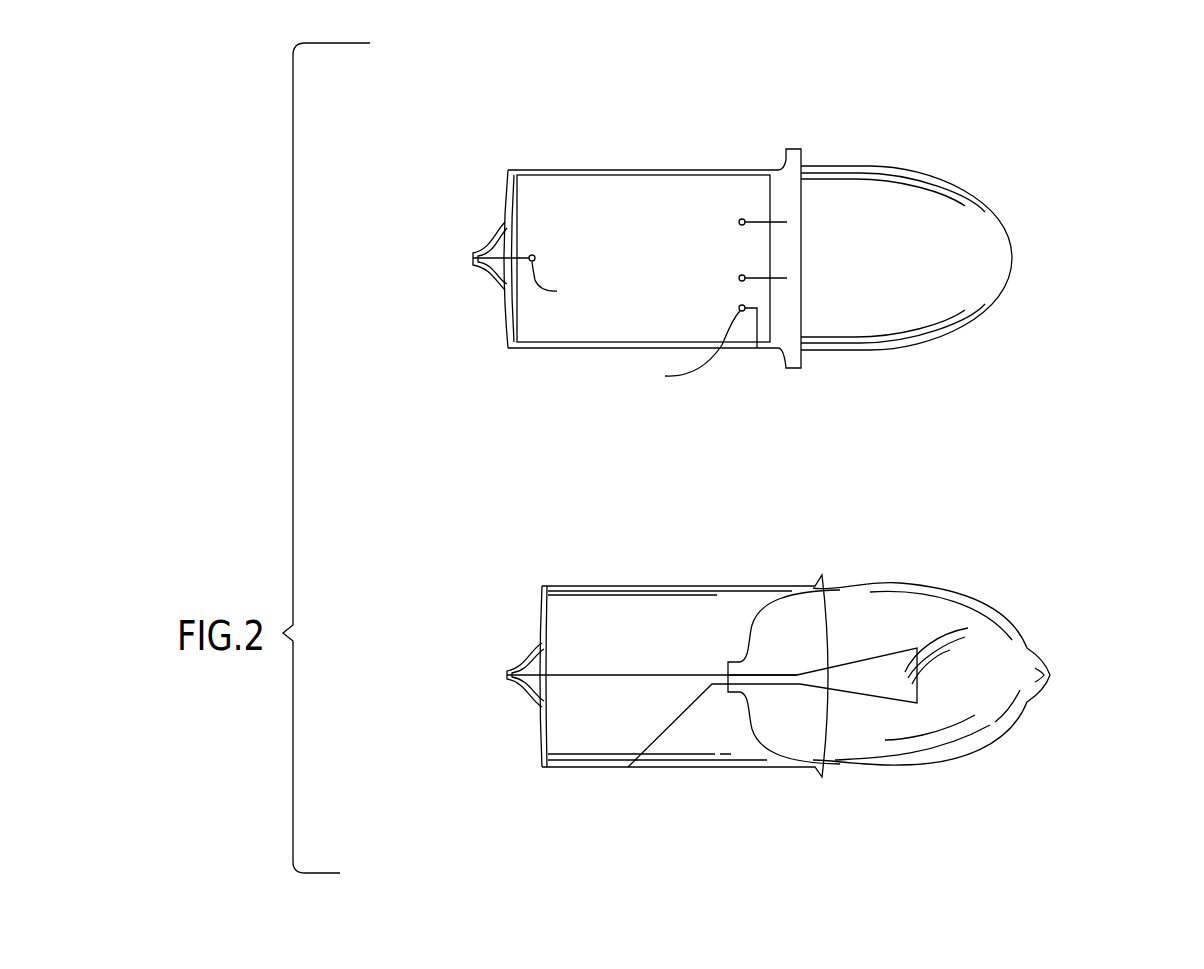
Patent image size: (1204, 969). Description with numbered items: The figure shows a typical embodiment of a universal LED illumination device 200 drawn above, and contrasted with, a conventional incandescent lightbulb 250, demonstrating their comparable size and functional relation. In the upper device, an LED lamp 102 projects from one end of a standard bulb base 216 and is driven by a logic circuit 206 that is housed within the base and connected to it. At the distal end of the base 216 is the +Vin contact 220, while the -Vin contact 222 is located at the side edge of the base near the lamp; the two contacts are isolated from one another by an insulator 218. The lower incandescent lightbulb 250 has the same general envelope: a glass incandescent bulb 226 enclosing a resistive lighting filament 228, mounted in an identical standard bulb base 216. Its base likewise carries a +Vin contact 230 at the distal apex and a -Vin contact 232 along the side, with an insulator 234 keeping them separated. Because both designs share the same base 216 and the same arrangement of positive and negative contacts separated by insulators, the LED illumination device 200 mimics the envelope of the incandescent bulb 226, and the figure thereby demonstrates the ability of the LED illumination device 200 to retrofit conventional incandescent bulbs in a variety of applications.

The LED illumination device 200 is at (726, 158).
The standard bulb base 216 is at (540, 348).
The insulator 218 is at (503, 182).
The +Vin contact 220 is at (472, 258).
The logic circuit 206 is at (678, 270).
The -Vin contact 222 is at (752, 350).
The LED lamp 102 is at (1007, 232).
The incandescent lightbulb 250 is at (778, 781).
The insulator 234 is at (540, 727).
The +Vin contact 230 is at (507, 675).
The -Vin contact 232 is at (628, 767).
The incandescent bulb 226 is at (1085, 605).
The resistive lighting filament 228 is at (917, 672).